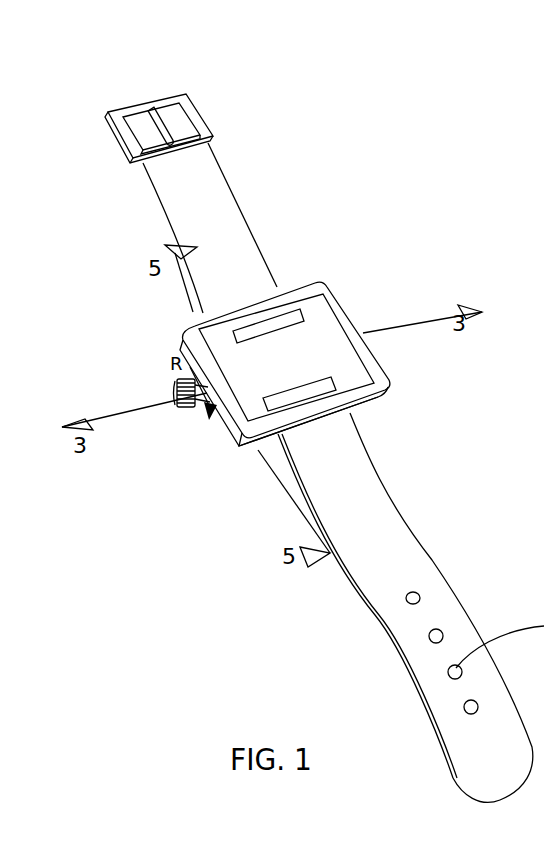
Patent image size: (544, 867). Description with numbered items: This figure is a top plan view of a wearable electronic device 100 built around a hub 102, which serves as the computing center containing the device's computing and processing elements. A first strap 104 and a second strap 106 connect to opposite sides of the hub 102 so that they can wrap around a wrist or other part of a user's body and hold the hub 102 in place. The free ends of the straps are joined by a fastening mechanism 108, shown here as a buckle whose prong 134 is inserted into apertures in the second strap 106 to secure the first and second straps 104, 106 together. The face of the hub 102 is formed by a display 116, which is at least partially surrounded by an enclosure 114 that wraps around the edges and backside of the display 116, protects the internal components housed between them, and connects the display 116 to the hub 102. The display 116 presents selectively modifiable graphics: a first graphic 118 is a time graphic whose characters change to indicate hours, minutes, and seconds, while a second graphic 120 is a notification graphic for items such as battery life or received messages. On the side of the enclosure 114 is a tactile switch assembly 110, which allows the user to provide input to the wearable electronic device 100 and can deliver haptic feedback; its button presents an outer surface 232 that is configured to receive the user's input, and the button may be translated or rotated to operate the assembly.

The wearable electronic device 100 is at (404, 148).
The hub 102 is at (342, 312).
The first strap 104 is at (218, 218).
The second strap 106 is at (373, 540).
The fastening mechanism 108 is at (204, 130).
The tactile switch assembly 110 is at (186, 410).
The enclosure 114 is at (246, 443).
The display 116 is at (337, 368).
The first graphic 118 is at (232, 364).
The second graphic 120 is at (294, 320).
The prong 134 is at (167, 129).
The outer surface 232 is at (175, 383).